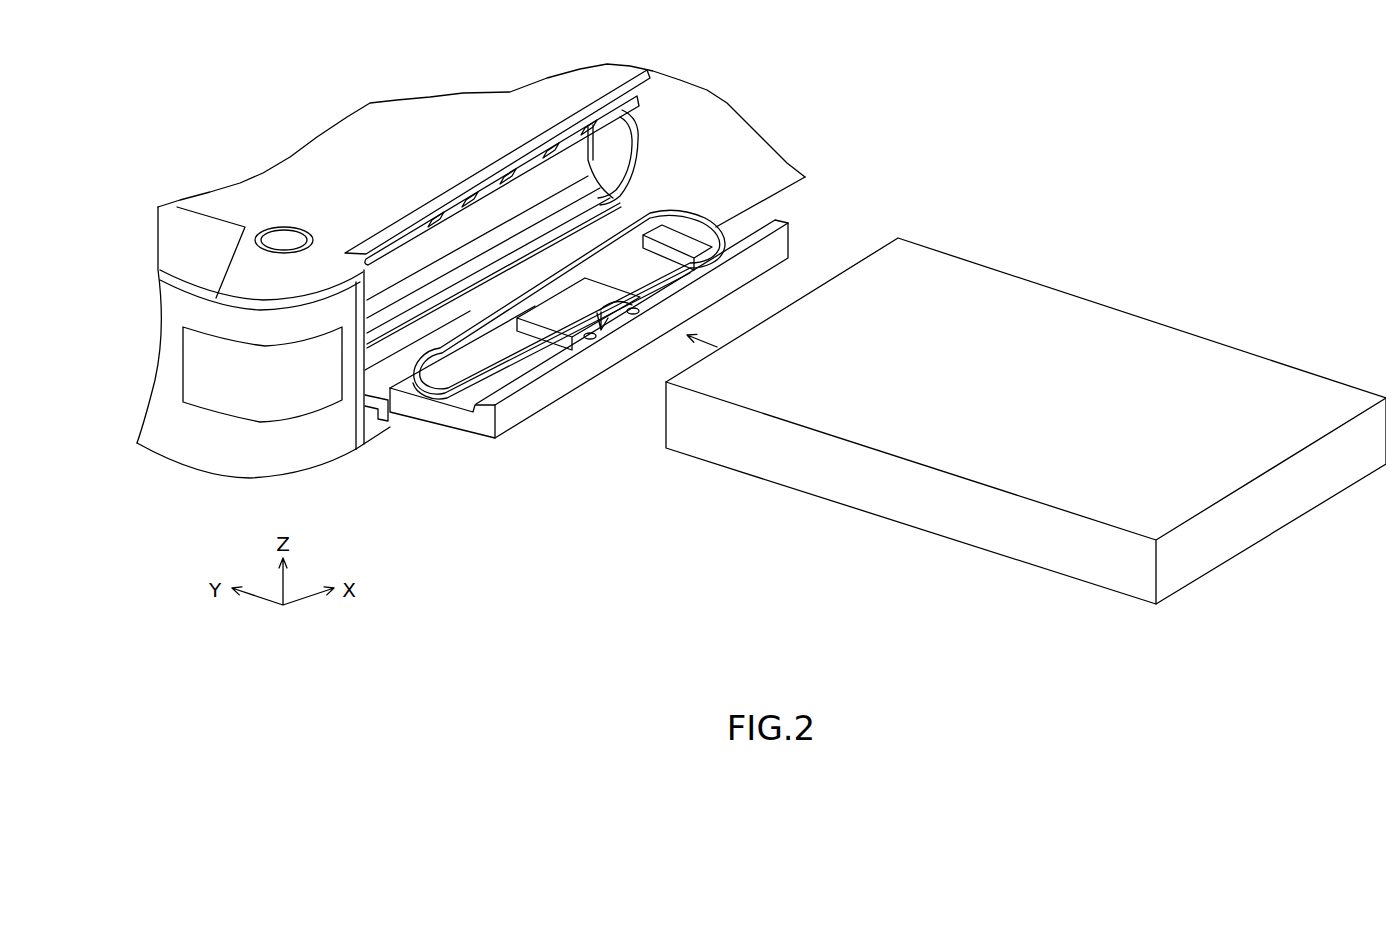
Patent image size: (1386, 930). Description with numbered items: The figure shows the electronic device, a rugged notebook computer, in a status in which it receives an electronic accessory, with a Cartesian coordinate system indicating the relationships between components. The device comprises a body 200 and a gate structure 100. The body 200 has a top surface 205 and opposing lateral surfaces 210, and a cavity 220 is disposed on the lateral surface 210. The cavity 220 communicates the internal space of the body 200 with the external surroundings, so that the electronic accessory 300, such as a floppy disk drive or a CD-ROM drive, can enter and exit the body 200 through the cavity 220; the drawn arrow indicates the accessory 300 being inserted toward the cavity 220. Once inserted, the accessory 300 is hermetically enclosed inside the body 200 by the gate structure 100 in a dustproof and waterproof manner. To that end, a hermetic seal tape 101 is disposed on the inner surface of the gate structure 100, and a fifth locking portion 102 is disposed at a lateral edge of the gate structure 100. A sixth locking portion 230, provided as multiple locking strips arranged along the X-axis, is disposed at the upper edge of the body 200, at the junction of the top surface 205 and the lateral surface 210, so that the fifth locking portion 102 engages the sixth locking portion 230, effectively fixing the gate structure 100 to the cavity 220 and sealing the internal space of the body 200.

The gate structure 100 is at (477, 437).
The hermetic seal tape 101 is at (447, 387).
The fifth locking portion 102 is at (640, 330).
The body 200 is at (177, 242).
The top surface 205 is at (352, 162).
The lateral surface 210 is at (707, 144).
The cavity 220 is at (544, 172).
The sixth locking portion 230 is at (480, 183).
The electronic accessory 300 is at (896, 502).